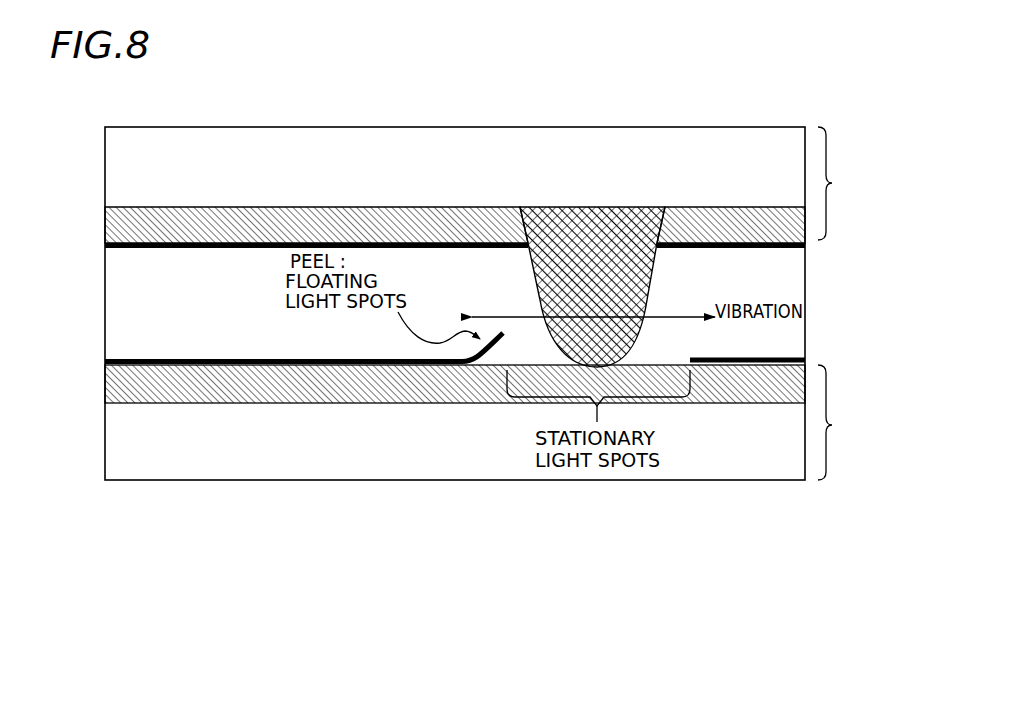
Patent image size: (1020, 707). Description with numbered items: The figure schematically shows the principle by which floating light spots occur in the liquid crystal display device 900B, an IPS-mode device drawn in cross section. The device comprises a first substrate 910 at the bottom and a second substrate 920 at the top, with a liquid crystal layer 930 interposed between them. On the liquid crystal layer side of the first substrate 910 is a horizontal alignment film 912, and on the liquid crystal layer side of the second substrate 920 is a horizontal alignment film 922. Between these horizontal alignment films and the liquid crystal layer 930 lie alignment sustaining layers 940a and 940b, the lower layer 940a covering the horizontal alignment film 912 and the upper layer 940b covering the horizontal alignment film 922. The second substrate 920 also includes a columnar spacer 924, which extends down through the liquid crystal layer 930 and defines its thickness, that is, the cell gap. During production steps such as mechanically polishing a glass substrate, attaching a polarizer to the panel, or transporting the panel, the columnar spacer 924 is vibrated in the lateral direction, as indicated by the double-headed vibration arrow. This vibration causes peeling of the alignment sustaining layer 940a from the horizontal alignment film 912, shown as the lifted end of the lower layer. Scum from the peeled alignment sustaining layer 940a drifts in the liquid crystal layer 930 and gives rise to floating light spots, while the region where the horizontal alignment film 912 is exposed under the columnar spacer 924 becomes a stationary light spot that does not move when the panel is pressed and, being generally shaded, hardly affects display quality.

The liquid crystal display device 900B is at (817, 57).
The first substrate 910 is at (845, 422).
The horizontal alignment film 912 is at (130, 382).
The second substrate 920 is at (845, 183).
The horizontal alignment film 922 is at (130, 226).
The columnar spacer 924 is at (590, 215).
The liquid crystal layer 930 is at (790, 296).
The alignment sustaining layer 940a is at (105, 362).
The alignment sustaining layer 940b is at (112, 249).